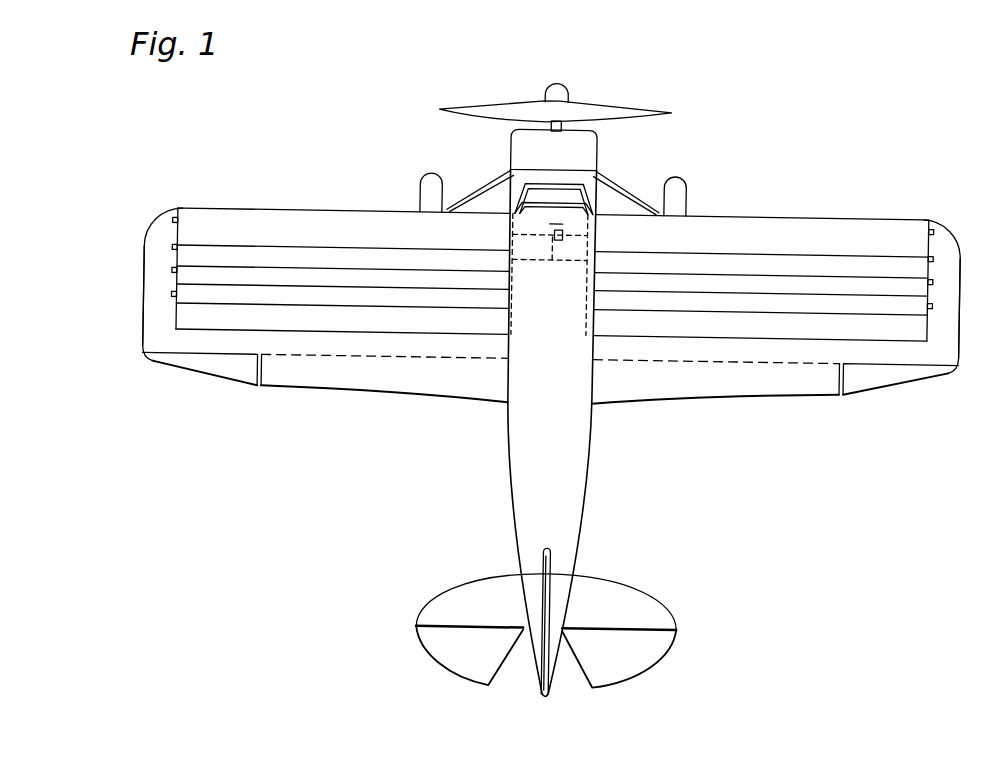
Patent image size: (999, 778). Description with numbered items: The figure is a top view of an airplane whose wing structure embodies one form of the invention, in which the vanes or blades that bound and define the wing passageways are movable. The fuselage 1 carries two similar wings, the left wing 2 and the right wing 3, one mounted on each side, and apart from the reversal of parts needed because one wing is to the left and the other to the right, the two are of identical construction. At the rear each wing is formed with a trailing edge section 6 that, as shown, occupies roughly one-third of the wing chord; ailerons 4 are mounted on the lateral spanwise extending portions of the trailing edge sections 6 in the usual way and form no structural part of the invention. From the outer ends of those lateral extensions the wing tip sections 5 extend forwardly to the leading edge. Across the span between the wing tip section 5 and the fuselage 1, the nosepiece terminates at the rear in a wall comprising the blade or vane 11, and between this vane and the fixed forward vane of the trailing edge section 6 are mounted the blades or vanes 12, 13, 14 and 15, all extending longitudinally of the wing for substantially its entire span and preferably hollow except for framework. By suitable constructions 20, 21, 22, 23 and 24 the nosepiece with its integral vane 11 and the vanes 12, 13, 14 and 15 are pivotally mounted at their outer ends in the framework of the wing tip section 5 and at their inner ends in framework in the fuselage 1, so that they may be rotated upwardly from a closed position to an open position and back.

The fuselage 1 is at (585, 455).
The left wing 2 is at (311, 407).
The right wing 3 is at (762, 215).
The aileron 4 is at (890, 395).
The wing tip section 5 is at (945, 347).
The trailing edge section 6 is at (732, 400).
The nosepiece blade or vane 11 is at (848, 213).
The blade or vane 12 is at (857, 248).
The blade or vane 13 is at (862, 273).
The blade or vane 14 is at (867, 292).
The blade or vane 15 is at (882, 308).
The pivotal mounting construction 20 is at (933, 222).
The pivotal mounting construction 21 is at (933, 240).
The pivotal mounting construction 22 is at (933, 258).
The pivotal mounting construction 23 is at (933, 285).
The pivotal mounting construction 24 is at (933, 307).